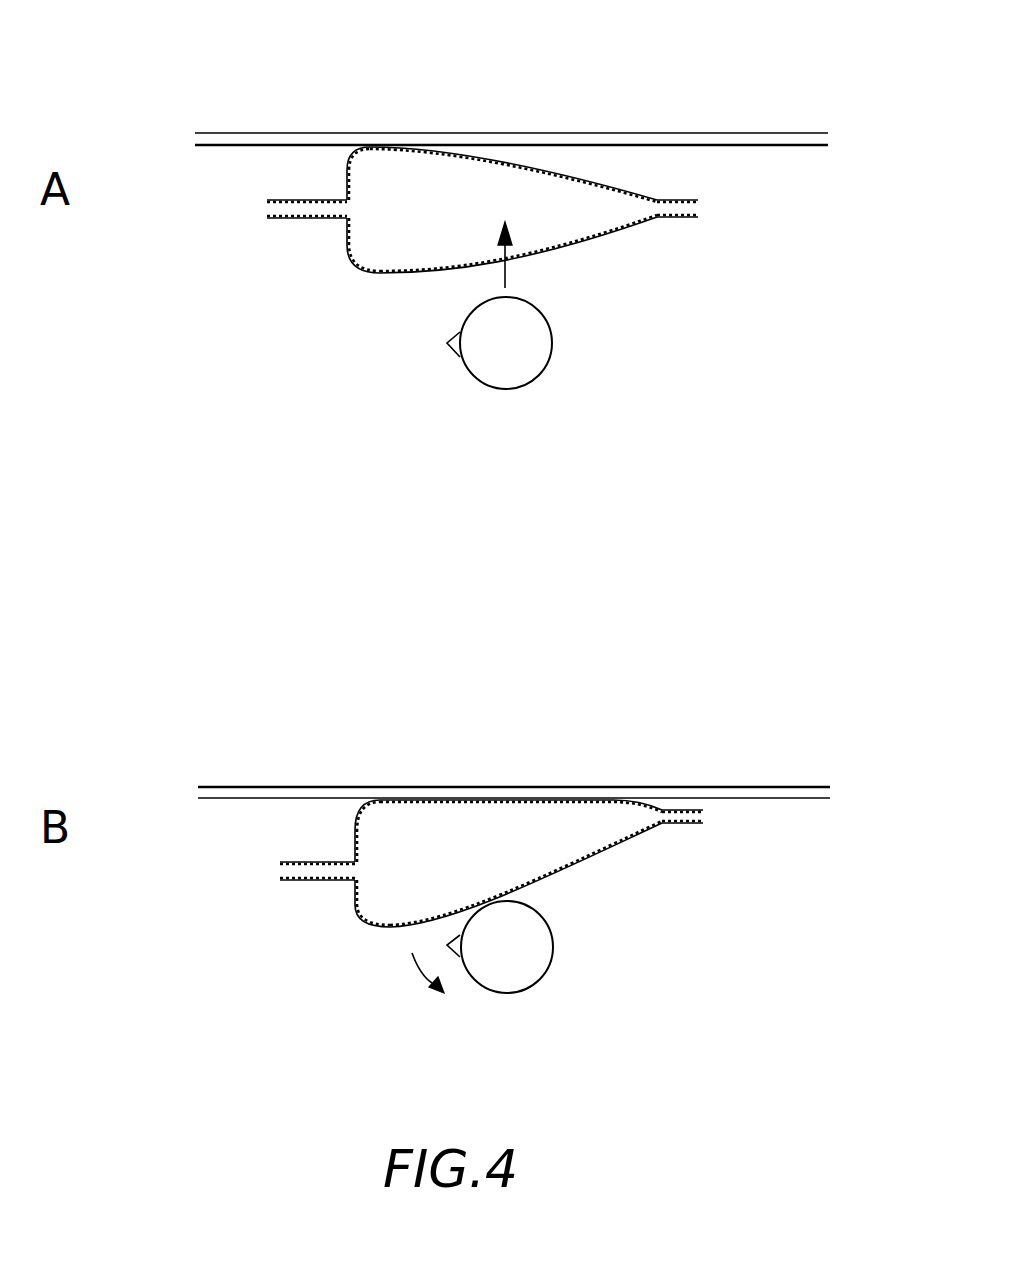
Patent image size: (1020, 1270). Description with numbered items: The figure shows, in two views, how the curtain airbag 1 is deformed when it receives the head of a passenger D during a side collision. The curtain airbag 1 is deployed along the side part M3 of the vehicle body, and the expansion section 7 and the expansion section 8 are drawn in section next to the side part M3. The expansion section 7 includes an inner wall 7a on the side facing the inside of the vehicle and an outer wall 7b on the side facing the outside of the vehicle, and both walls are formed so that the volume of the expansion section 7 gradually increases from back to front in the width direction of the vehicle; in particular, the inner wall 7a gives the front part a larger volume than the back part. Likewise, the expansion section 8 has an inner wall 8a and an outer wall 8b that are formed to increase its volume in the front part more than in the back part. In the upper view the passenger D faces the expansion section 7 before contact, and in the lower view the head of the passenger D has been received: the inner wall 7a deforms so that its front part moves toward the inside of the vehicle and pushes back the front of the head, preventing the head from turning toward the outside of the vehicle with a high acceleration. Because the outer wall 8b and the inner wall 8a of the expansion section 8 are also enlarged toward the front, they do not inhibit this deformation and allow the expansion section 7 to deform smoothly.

The side part M3 is at (240, 133).
The curtain airbag 1 is at (310, 207).
The expansion section 7 is at (492, 469).
The inner wall 7a is at (407, 270).
The outer wall 7b is at (347, 168).
The expansion section 8 is at (602, 423).
The inner wall 8a is at (558, 240).
The outer wall 8b is at (530, 157).
The passenger D is at (552, 340).